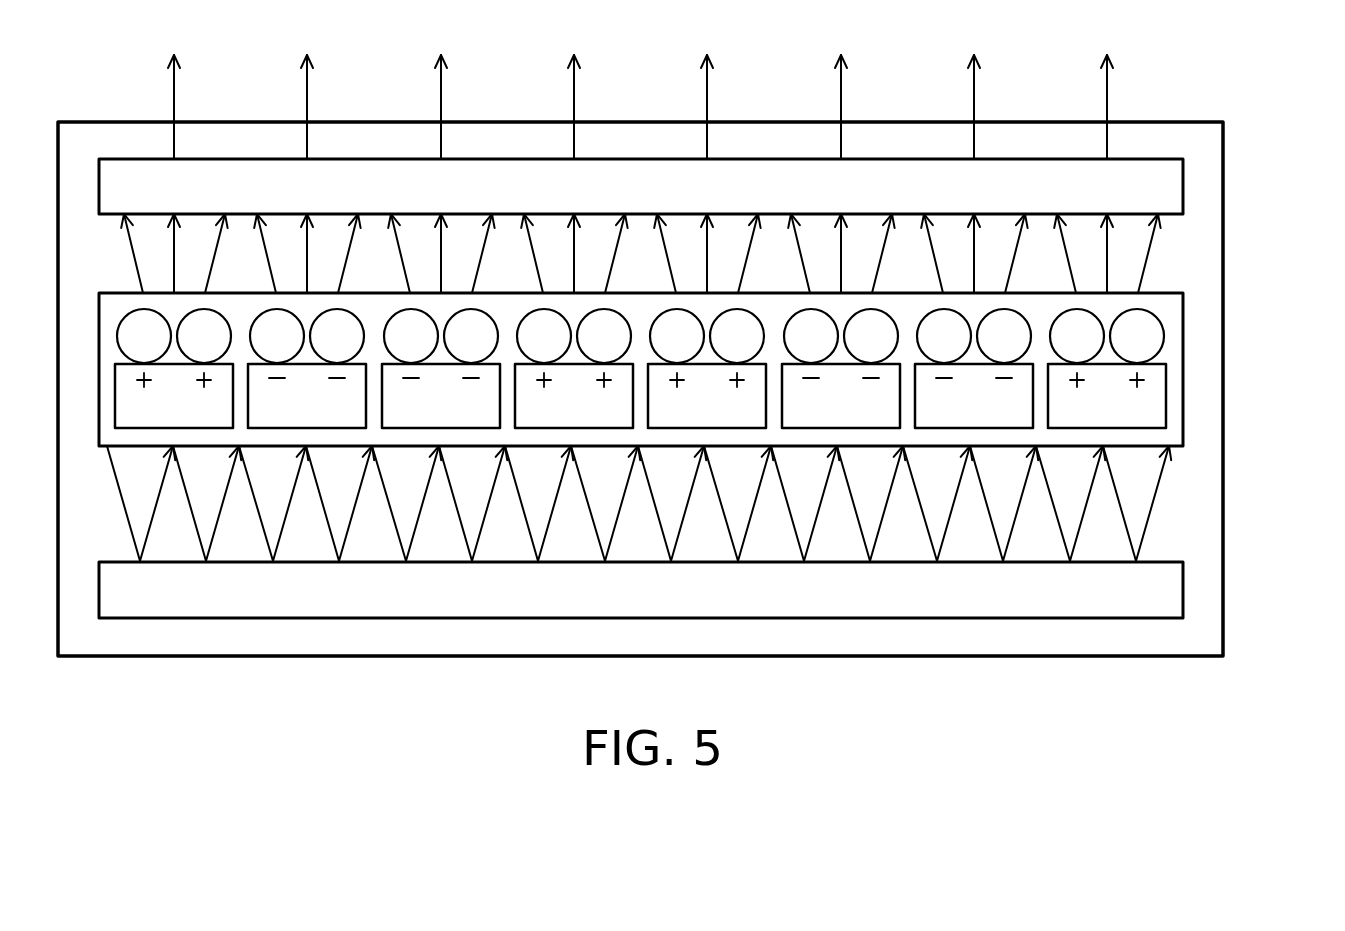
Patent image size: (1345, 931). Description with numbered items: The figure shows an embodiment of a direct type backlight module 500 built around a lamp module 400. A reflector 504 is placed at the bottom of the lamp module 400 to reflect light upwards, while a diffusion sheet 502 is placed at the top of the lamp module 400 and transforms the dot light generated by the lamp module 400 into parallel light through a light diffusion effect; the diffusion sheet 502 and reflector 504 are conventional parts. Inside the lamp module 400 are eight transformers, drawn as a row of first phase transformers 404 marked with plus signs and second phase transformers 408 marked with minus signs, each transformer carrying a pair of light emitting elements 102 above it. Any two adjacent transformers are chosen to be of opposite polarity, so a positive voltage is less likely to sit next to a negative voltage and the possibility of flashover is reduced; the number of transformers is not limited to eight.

The light emitting diode 102 is at (640, 336).
The lamp module 400 is at (1178, 324).
The first phase transformer 404 is at (640, 396).
The second phase transformer 408 is at (640, 396).
The direct type backlight module 500 is at (1223, 637).
The diffusion sheet 502 is at (1168, 187).
The reflector 504 is at (1167, 593).